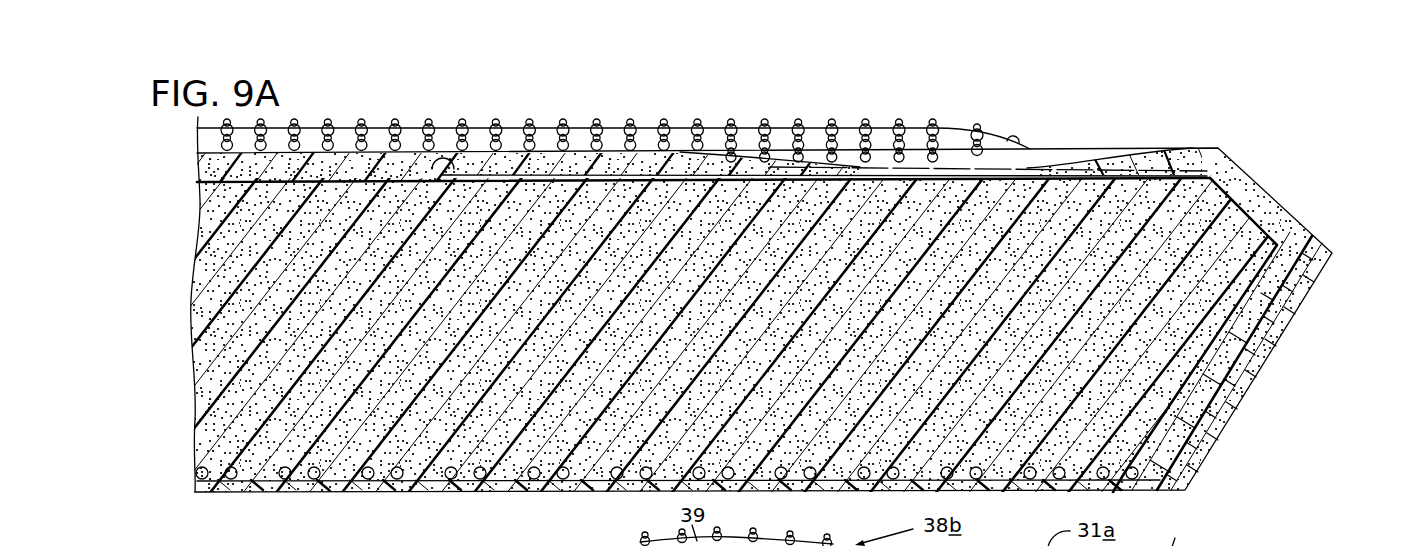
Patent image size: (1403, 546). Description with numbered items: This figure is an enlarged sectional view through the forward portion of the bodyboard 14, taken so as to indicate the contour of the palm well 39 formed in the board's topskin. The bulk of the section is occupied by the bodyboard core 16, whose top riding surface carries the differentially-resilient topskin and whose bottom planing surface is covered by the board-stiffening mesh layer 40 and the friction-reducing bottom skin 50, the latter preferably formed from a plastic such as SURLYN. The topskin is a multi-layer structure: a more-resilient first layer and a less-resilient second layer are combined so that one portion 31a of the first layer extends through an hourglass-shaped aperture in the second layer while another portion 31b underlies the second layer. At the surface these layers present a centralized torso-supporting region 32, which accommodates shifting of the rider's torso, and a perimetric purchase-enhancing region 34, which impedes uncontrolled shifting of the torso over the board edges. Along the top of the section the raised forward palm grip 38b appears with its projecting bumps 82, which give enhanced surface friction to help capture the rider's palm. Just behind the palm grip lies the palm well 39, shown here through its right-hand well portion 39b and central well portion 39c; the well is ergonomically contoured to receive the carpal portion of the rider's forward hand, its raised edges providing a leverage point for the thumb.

The bodyboard 14 is at (1212, 120).
The bodyboard core 16 is at (408, 430).
The portion of the first layer 31a is at (307, 164).
The portion of the first layer 31b is at (1245, 206).
The torso-supporting region 32 is at (407, 156).
The purchase-enhancing region 34 is at (540, 150).
The forward palm grip 38b is at (712, 96).
The palm well 39 is at (948, 161).
The right-hand well portion 39b is at (1030, 168).
The central well portion 39c is at (733, 545).
The board-stiffening mesh layer 40 is at (275, 474).
The friction-reducing bottom skin 50 is at (293, 496).
The projecting bumps 82 is at (867, 122).